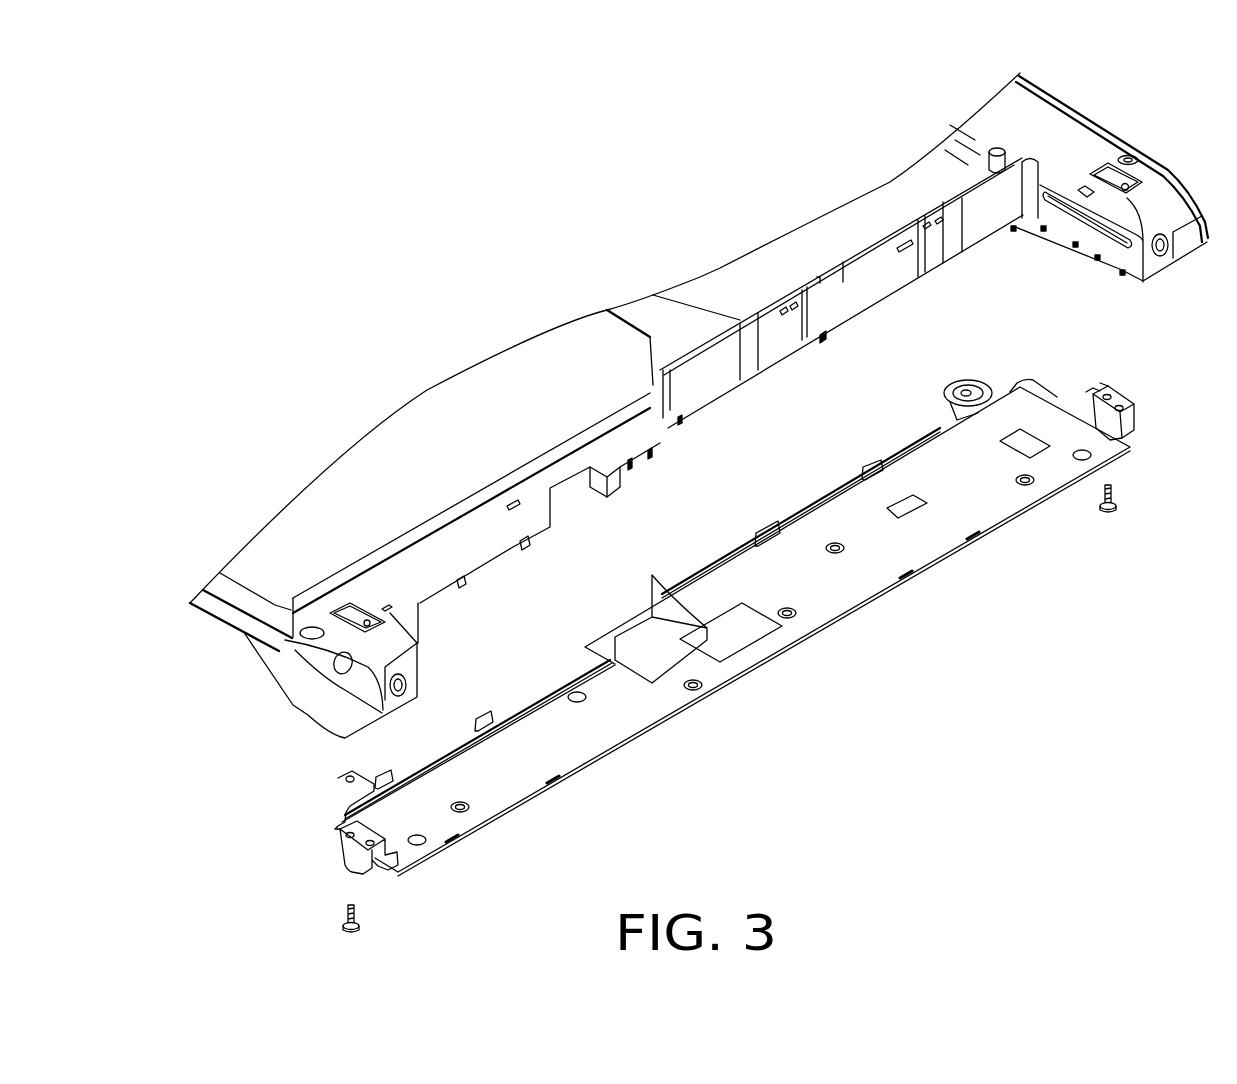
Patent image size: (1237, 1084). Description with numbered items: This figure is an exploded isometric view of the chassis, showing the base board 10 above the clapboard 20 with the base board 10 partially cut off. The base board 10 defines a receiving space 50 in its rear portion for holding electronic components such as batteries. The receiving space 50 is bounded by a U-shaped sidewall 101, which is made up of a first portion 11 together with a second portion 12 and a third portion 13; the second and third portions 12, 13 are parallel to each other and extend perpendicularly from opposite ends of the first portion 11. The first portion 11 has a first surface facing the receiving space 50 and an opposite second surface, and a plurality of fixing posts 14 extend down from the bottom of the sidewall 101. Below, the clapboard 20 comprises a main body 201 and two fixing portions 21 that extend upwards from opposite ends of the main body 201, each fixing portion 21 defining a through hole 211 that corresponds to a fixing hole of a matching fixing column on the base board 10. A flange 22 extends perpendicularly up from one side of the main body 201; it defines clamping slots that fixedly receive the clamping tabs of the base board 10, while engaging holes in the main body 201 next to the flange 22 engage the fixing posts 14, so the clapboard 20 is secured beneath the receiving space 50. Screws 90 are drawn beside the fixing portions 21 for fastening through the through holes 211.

The base board 10 is at (1045, 133).
The U-shaped sidewall 101 is at (402, 293).
The first portion 11 is at (773, 337).
The second portion 12 is at (1063, 183).
The third portion 13 is at (417, 603).
The fixing posts 14 is at (823, 337).
The receiving space 50 is at (995, 295).
The clapboard 20 is at (1040, 498).
The main body 201 is at (835, 578).
The fixing portions 21 is at (1130, 418).
The through hole 211 is at (1107, 393).
The flange 22 is at (820, 503).
The screw 90 is at (1117, 503).